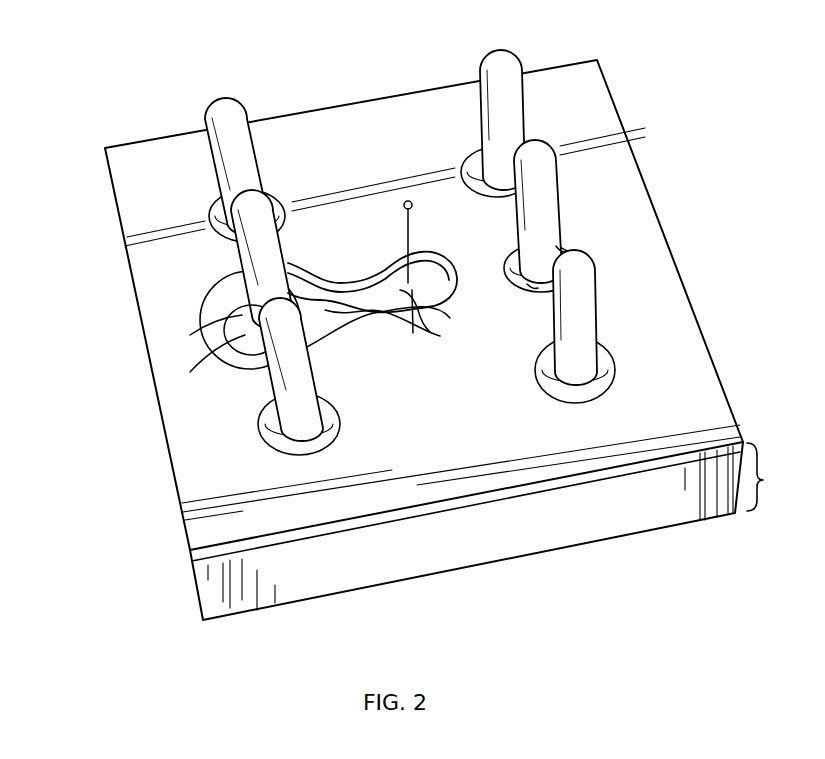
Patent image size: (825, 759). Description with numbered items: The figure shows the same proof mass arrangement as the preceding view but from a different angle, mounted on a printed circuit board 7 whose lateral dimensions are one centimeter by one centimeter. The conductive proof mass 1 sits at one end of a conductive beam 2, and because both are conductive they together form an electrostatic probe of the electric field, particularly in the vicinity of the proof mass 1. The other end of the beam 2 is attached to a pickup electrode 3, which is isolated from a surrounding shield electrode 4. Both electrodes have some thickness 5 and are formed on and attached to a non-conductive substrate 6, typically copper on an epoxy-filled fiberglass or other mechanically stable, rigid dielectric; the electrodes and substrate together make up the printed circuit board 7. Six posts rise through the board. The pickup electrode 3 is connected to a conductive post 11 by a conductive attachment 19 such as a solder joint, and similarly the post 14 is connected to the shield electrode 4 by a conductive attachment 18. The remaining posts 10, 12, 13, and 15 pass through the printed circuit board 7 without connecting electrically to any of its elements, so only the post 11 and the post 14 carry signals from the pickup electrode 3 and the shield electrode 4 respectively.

The proof mass 1 is at (413, 206).
The beam 2 is at (417, 247).
The pickup electrode 3 is at (240, 318).
The shield electrode 4 is at (418, 107).
The thickness 5 is at (280, 200).
The non-conductive substrate 6 is at (228, 233).
The printed circuit board 7 is at (765, 477).
The post 10 is at (230, 153).
The conductive post 11 is at (255, 260).
The post 12 is at (277, 448).
The post 13 is at (513, 68).
The post 14 is at (543, 185).
The post 15 is at (588, 312).
The conductive attachment 18 is at (530, 288).
The conductive attachment 19 is at (340, 327).